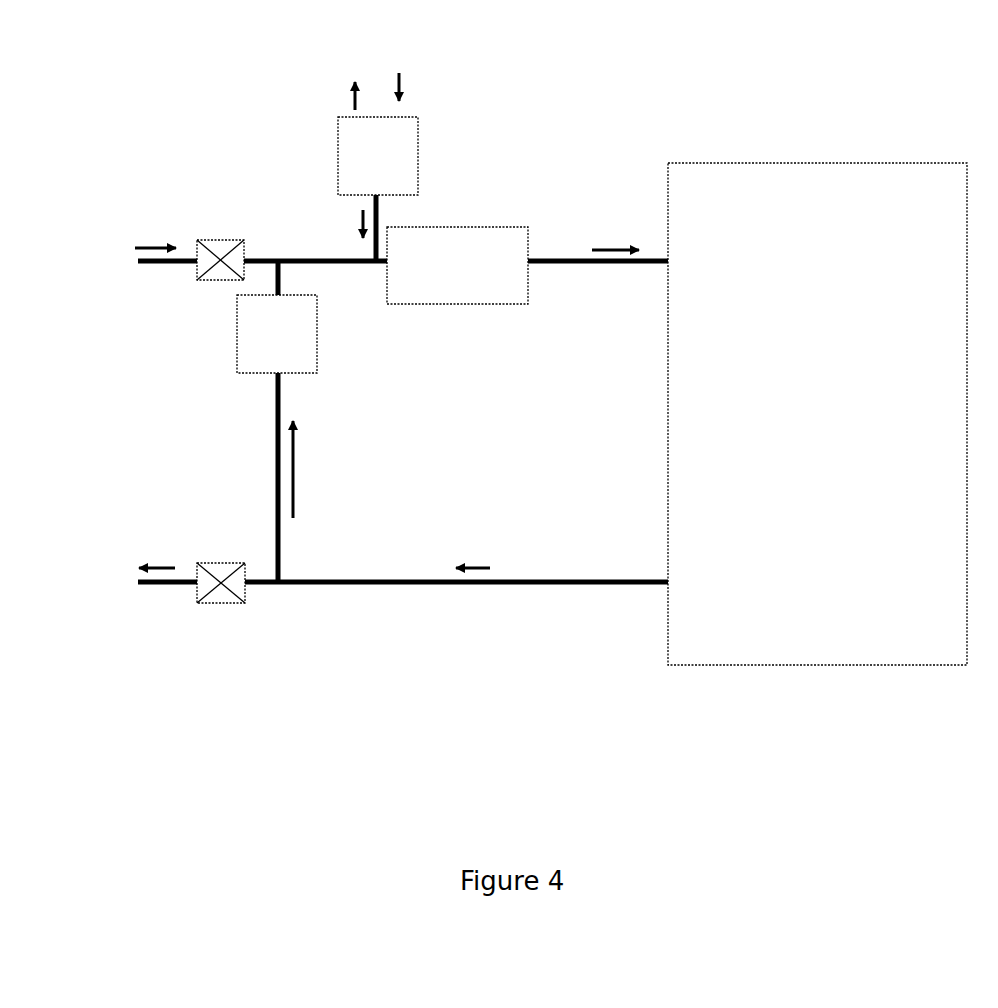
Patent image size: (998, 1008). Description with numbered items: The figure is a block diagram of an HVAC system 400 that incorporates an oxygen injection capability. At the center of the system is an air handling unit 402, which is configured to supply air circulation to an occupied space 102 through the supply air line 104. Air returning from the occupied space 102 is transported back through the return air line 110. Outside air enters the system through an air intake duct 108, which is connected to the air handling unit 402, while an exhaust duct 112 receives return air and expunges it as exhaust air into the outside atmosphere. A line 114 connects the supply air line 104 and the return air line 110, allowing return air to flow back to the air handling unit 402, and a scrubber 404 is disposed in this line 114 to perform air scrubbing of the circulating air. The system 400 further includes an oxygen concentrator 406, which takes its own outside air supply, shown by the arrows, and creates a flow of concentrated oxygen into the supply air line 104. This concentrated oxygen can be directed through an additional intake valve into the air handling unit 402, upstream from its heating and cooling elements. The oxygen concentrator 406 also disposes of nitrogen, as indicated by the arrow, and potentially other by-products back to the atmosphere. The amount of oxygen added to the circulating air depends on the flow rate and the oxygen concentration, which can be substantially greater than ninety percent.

The HVAC system 400 is at (778, 86).
The occupied space 102 is at (732, 164).
The supply air line 104 is at (560, 260).
The air intake duct 108 is at (220, 240).
The return air line 110 is at (580, 582).
The exhaust duct 112 is at (220, 604).
The line connecting supply air line and return air line 114 is at (282, 553).
The air handling unit 402 is at (457, 227).
The scrubber 404 is at (317, 357).
The oxygen concentrator 406 is at (418, 150).